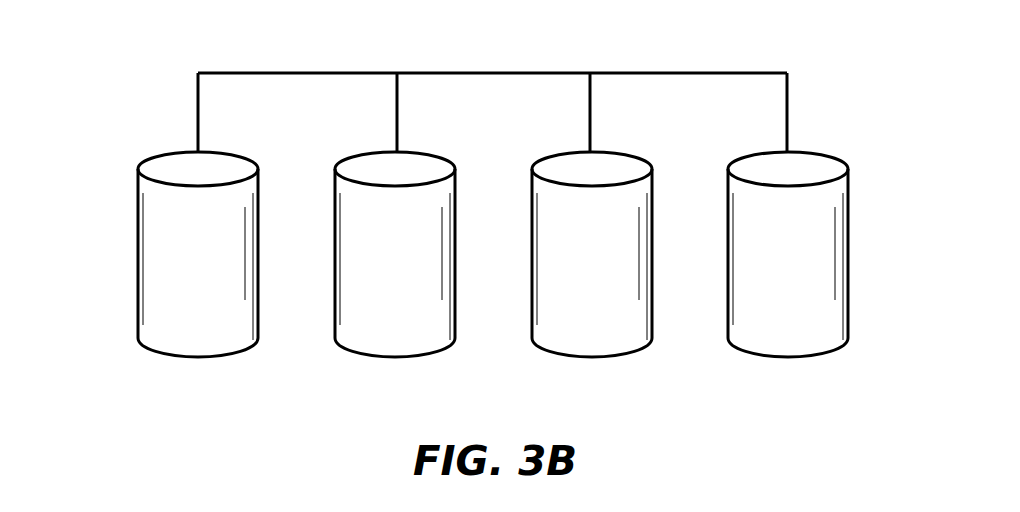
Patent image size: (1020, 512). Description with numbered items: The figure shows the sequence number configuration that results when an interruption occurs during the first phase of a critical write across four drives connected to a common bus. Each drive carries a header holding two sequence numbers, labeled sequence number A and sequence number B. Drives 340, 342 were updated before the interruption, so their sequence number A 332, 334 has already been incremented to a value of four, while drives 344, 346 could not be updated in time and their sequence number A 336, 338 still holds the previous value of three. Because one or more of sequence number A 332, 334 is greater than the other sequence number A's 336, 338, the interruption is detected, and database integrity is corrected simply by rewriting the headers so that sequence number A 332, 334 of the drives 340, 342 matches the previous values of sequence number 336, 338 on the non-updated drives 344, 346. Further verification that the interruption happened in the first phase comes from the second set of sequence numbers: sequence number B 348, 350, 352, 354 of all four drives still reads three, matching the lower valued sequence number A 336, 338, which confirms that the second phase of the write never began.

The drive 340 is at (585, 227).
The drive 342 is at (786, 233).
The drive 344 is at (170, 234).
The drive 346 is at (379, 234).
The sequence number A 332 is at (550, 236).
The sequence number A 334 is at (752, 236).
The sequence number A 336 is at (158, 235).
The sequence number A 338 is at (352, 235).
The sequence number B 348 is at (147, 262).
The sequence number B 350 is at (350, 262).
The sequence number B 352 is at (548, 263).
The sequence number B 354 is at (735, 262).